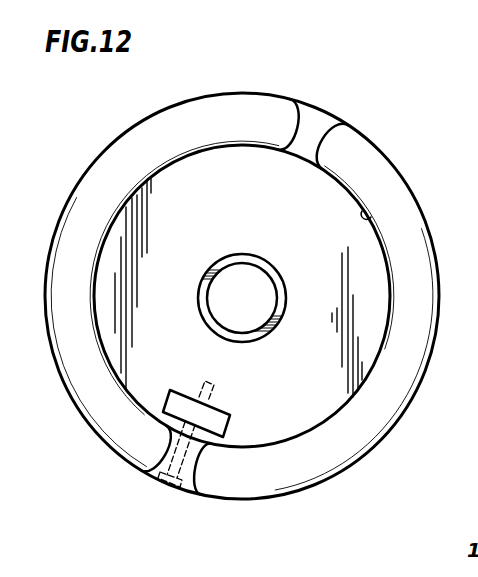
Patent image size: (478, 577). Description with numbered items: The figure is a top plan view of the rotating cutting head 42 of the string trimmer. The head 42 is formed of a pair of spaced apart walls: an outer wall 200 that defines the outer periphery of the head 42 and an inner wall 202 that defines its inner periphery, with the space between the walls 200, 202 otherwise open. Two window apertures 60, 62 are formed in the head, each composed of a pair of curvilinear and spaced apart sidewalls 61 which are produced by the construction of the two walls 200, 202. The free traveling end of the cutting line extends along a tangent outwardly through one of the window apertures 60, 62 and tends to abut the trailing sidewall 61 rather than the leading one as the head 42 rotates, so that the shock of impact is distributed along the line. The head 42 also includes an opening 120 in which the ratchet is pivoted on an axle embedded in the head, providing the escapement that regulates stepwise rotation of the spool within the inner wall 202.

The outer wall 200 is at (98, 157).
The window aperture 62 is at (312, 127).
The inner wall 202 is at (365, 203).
The head 42 is at (362, 473).
The sidewall 61 is at (158, 450).
The window aperture 60 is at (197, 497).
The opening 120 is at (213, 410).